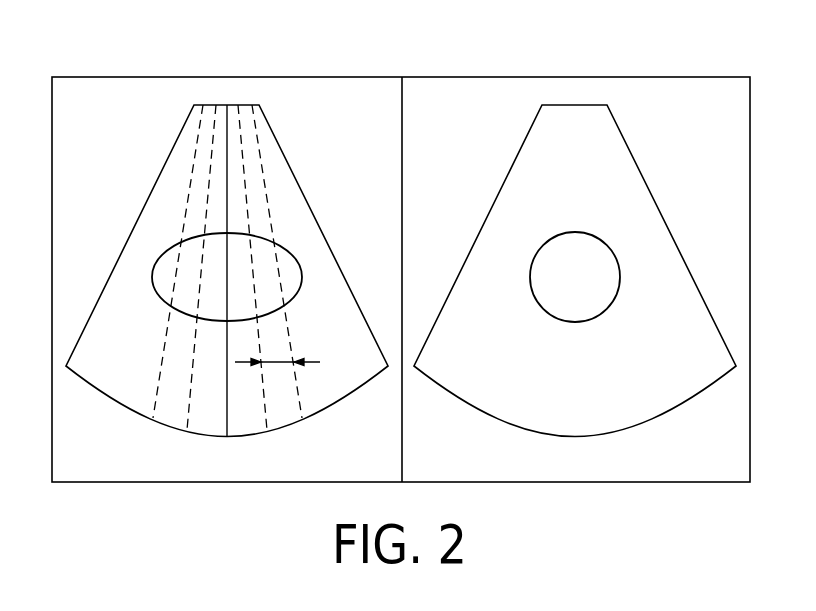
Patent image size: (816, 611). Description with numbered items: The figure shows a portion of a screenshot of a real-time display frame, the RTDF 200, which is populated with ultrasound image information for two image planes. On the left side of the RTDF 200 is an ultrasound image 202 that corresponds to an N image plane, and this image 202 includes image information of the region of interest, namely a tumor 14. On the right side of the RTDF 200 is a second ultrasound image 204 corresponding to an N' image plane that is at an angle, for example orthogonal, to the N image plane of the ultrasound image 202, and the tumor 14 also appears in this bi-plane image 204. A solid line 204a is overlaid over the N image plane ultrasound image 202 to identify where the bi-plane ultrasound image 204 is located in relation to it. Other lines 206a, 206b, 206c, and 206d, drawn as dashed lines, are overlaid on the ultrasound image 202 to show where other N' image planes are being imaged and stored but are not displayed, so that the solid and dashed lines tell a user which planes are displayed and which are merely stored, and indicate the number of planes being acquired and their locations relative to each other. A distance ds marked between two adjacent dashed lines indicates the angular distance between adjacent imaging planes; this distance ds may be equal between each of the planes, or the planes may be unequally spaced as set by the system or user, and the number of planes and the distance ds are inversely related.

The real-time display frame (RTDF) 200 is at (447, 77).
The ultrasound image 202 is at (290, 167).
The ultrasound image 204 is at (637, 165).
The line 204a is at (234, 104).
The line 206a is at (153, 395).
The line 206b is at (187, 406).
The line 206c is at (266, 406).
The line 206d is at (302, 395).
The tumor 14 is at (152, 278).
The distance ds is at (277, 352).